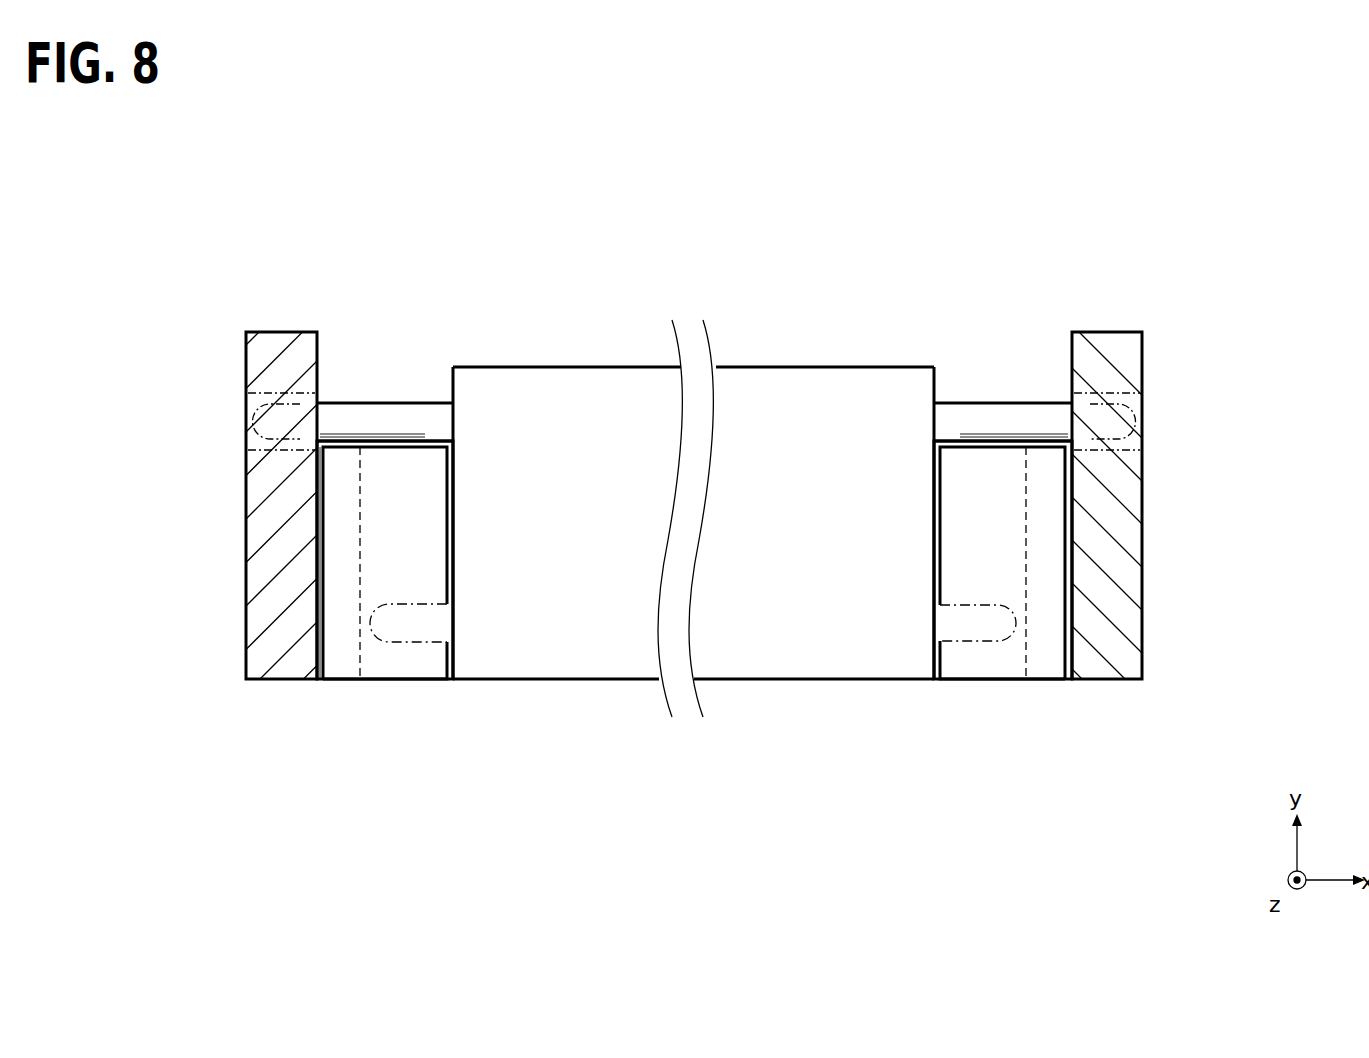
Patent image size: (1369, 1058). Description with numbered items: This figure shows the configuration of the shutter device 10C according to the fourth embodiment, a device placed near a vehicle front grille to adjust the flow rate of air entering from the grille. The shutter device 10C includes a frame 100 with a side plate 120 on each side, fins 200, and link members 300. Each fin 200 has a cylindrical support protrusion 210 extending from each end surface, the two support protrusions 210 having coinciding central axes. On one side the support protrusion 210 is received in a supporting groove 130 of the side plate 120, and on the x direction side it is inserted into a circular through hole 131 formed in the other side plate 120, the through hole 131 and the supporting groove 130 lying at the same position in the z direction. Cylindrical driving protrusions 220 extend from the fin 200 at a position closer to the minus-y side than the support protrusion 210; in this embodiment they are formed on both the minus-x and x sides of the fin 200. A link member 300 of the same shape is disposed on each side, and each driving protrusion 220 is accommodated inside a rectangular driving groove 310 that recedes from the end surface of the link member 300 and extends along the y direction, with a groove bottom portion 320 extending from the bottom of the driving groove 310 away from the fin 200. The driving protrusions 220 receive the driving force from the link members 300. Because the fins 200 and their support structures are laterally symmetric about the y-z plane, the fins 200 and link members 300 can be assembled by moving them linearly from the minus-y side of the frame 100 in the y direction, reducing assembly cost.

The shutter device 10C is at (366, 144).
The frame 100 is at (732, 455).
The side plate 120 is at (281, 331).
The supporting groove 130 is at (245, 419).
The through hole 131 is at (1147, 415).
The fin 200 is at (540, 390).
The support protrusion 210 is at (386, 418).
The driving protrusion 220 is at (415, 643).
The link member 300 is at (340, 683).
The driving groove 310 is at (360, 661).
The groove bottom portion 320 is at (338, 597).